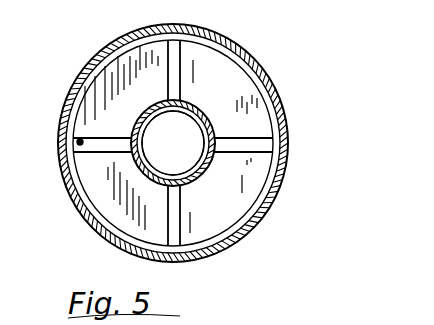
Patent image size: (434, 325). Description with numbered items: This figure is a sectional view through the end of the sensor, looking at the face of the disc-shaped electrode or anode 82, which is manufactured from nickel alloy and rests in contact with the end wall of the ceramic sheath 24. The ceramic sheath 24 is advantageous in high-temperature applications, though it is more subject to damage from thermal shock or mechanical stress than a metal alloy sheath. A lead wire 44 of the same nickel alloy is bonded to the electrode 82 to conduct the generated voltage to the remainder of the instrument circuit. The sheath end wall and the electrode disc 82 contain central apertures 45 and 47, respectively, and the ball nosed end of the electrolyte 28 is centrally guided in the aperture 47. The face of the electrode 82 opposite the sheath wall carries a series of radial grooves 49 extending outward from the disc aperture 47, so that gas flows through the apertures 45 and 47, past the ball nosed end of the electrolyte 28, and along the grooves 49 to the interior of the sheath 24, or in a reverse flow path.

The ceramic sheath 24 is at (62, 172).
The electrolyte 28 is at (223, 98).
The lead wire 44 is at (72, 141).
The central aperture 45 is at (176, 161).
The central aperture 47 is at (173, 143).
The radial grooves 49 is at (170, 207).
The electrode 82 is at (118, 184).